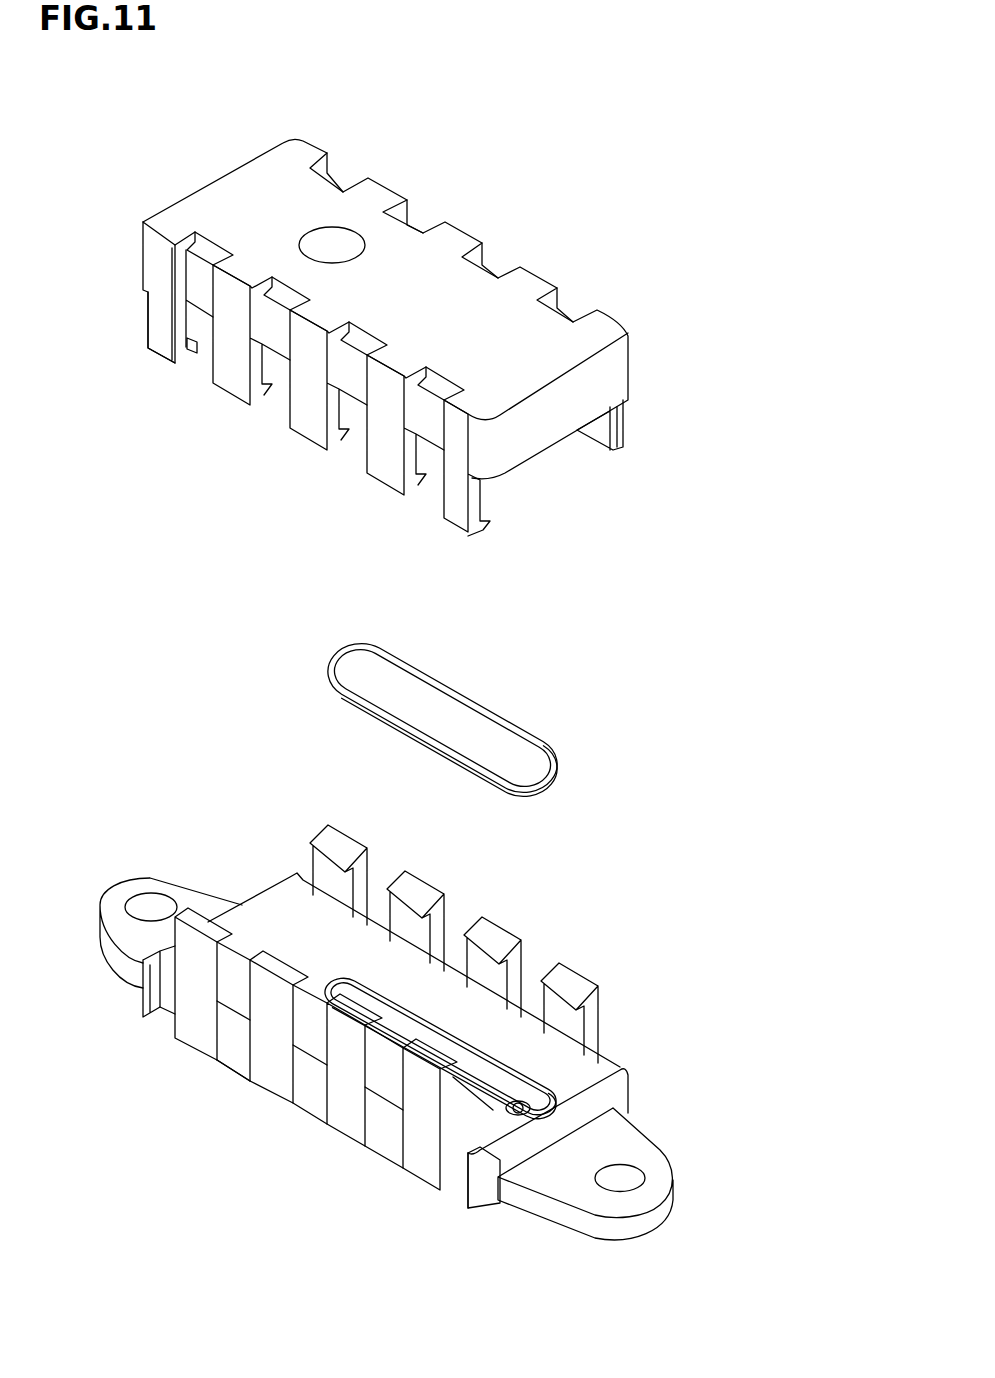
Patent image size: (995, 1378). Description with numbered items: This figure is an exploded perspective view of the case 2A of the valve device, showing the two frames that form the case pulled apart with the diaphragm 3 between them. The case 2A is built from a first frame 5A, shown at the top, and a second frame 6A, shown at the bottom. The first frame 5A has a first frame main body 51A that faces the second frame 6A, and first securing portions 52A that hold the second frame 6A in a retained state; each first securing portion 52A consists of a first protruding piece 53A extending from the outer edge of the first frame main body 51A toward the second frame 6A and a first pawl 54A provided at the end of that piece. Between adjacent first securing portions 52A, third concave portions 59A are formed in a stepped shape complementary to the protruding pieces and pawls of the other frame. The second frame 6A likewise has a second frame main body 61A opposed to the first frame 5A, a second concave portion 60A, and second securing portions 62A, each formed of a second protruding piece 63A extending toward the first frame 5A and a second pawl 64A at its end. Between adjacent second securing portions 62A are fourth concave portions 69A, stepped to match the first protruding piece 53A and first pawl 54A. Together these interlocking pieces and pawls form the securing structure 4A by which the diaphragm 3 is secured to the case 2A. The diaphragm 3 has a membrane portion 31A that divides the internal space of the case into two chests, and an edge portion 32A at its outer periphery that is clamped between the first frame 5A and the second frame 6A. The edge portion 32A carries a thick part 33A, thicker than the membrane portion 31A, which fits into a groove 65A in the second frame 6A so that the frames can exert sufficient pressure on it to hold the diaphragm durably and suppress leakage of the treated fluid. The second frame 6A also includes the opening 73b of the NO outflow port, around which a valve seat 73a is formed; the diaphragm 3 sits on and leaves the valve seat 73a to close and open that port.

The case 2A is at (785, 474).
The diaphragm 3 is at (699, 725).
The securing structure 4A is at (115, 309).
The first frame 5A is at (610, 375).
The second frame 6A is at (612, 1060).
The membrane portion 31A is at (418, 700).
The edge portion 32A is at (508, 732).
The thick part 33A is at (449, 747).
The first frame main body 51A is at (425, 272).
The first securing portion 52A is at (625, 437).
The first protruding piece 53A is at (160, 317).
The first pawl 54A is at (194, 355).
The third concave portion 59A is at (353, 155).
The second concave portion 60A is at (480, 1085).
The second frame main body 61A is at (290, 920).
The second securing portion 62A is at (418, 927).
The second protruding piece 63A is at (220, 972).
The second pawl 64A is at (217, 1058).
The groove 65A is at (540, 1080).
The fourth concave portion 69A is at (238, 1075).
The valve seat 73a is at (478, 1118).
The opening 73b is at (520, 1114).